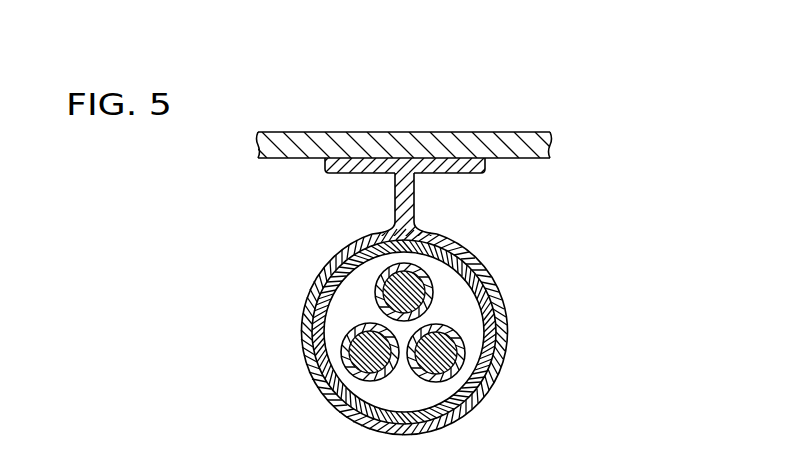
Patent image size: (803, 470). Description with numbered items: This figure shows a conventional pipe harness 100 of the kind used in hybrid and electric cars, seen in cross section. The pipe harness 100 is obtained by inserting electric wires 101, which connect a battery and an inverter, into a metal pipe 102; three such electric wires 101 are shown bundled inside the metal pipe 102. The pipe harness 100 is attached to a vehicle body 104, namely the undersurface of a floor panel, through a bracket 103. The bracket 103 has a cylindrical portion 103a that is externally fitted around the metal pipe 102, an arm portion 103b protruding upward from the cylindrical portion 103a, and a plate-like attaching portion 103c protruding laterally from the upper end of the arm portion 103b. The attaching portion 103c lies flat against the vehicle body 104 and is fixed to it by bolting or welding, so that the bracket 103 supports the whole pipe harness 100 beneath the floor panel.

The pipe harness 100 is at (583, 240).
The electric wires 101 is at (350, 315).
The metal pipe 102 is at (468, 267).
The bracket 103 is at (291, 344).
The cylindrical portion 103a is at (490, 383).
The arm portion 103b is at (408, 190).
The attaching portion 103c is at (347, 167).
The vehicle body 104 is at (505, 137).